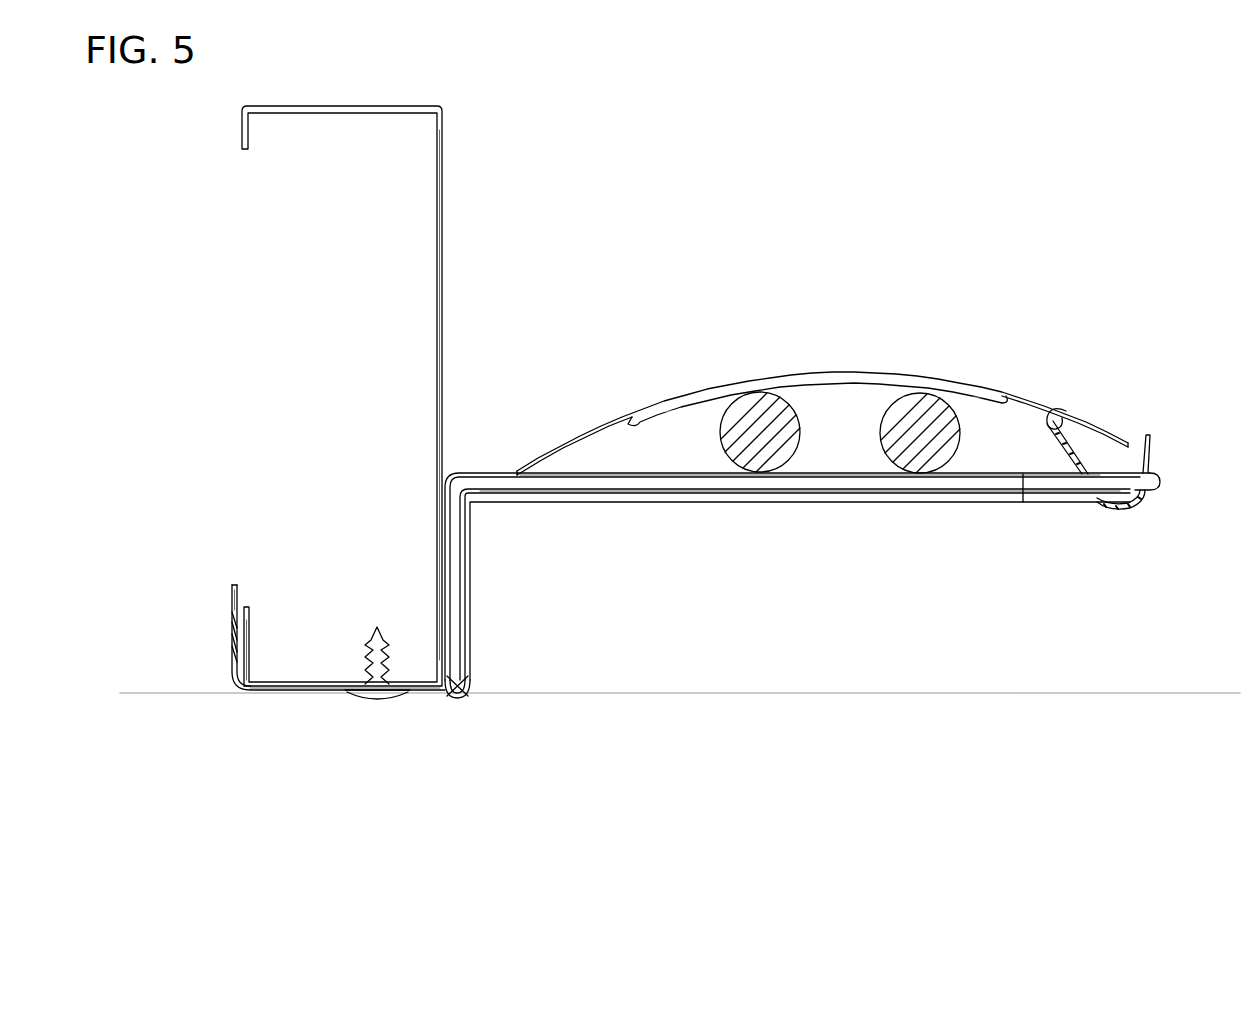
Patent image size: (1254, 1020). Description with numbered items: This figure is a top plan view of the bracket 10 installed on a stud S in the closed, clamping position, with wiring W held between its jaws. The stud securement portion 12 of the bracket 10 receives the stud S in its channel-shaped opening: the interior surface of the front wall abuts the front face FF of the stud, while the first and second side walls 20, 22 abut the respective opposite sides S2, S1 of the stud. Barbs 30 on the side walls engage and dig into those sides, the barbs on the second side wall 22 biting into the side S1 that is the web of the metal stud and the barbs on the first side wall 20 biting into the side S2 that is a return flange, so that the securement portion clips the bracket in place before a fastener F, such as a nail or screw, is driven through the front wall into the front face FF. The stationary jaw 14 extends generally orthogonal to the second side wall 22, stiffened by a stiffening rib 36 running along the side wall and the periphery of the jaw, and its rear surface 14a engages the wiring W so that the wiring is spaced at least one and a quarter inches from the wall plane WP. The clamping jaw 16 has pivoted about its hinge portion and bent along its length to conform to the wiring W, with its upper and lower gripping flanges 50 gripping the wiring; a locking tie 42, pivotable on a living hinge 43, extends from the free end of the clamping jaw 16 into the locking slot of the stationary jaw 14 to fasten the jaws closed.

The stud S is at (442, 216).
The side of the stud S1 is at (442, 294).
The side of the stud S2 is at (249, 632).
The fastener F is at (380, 630).
The front face of the stud FF is at (297, 693).
The wall plane WP is at (1160, 693).
The bracket 10 is at (655, 580).
The stud securement portion 12 is at (262, 697).
The stationary jaw 14 is at (737, 503).
The rear surface of the stationary jaw 14a is at (848, 468).
The clamping jaw 16 is at (822, 380).
The first side wall 20 is at (232, 594).
The second side wall 22 is at (452, 620).
The barbs 30 is at (232, 644).
The stiffening rib 36 is at (527, 497).
The locking tie 42 is at (1108, 510).
The living hinge 43 is at (1066, 410).
The gripping flanges 50 is at (826, 380).
The wiring W is at (788, 410).